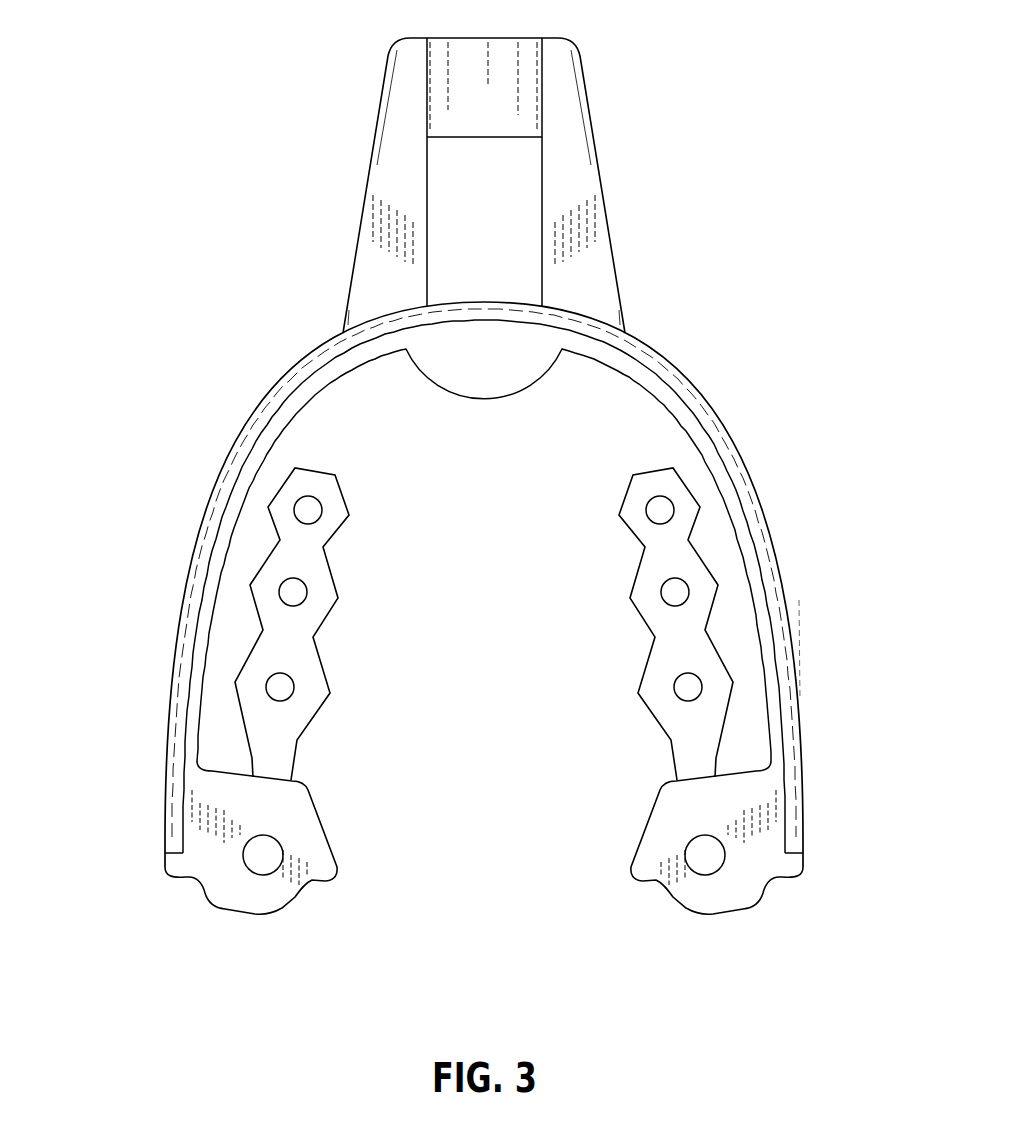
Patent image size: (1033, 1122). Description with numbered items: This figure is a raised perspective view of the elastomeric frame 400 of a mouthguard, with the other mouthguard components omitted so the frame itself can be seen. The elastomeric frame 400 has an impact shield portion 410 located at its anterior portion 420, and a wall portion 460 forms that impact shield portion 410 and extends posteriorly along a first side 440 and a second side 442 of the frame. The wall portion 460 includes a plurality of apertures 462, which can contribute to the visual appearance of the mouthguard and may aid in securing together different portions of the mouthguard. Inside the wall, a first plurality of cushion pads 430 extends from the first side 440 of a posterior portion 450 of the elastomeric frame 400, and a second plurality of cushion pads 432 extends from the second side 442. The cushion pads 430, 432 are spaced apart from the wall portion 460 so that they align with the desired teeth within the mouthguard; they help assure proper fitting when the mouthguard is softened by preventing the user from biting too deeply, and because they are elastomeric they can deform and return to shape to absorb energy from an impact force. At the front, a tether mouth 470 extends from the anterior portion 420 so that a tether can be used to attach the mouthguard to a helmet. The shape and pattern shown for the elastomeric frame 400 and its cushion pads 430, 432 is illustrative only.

The elastomeric frame 400 is at (148, 351).
The impact shield portion 410 is at (633, 332).
The anterior portion 420 is at (308, 345).
The first plurality of cushion pads 430 is at (316, 623).
The second plurality of cushion pads 432 is at (662, 627).
The first side 440 is at (152, 793).
The second side 442 is at (797, 641).
The posterior portion 450 is at (821, 795).
The wall portion 460 is at (768, 513).
The apertures 462 is at (202, 512).
The tether mouth 470 is at (380, 86).